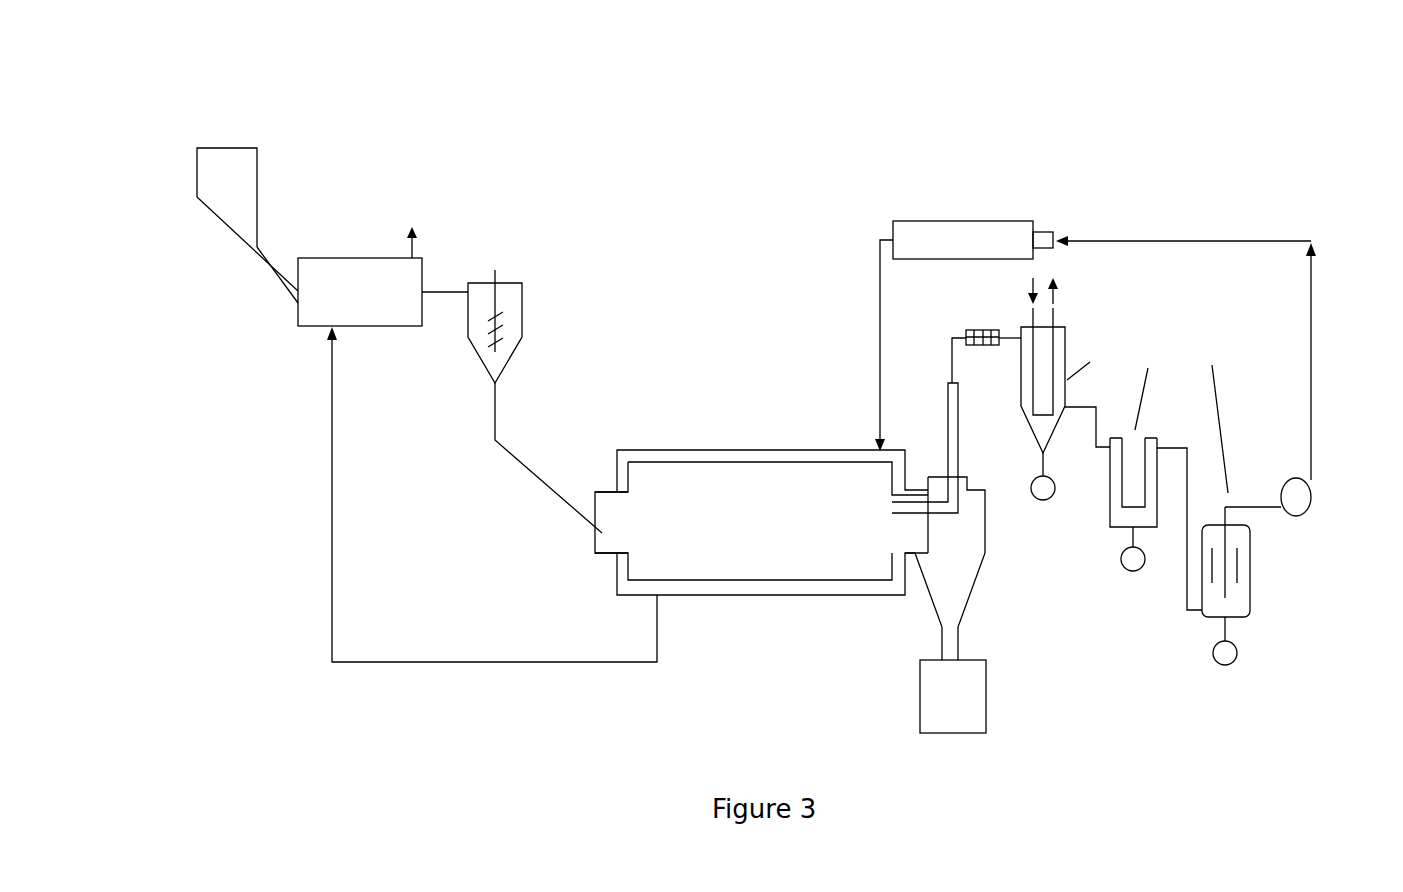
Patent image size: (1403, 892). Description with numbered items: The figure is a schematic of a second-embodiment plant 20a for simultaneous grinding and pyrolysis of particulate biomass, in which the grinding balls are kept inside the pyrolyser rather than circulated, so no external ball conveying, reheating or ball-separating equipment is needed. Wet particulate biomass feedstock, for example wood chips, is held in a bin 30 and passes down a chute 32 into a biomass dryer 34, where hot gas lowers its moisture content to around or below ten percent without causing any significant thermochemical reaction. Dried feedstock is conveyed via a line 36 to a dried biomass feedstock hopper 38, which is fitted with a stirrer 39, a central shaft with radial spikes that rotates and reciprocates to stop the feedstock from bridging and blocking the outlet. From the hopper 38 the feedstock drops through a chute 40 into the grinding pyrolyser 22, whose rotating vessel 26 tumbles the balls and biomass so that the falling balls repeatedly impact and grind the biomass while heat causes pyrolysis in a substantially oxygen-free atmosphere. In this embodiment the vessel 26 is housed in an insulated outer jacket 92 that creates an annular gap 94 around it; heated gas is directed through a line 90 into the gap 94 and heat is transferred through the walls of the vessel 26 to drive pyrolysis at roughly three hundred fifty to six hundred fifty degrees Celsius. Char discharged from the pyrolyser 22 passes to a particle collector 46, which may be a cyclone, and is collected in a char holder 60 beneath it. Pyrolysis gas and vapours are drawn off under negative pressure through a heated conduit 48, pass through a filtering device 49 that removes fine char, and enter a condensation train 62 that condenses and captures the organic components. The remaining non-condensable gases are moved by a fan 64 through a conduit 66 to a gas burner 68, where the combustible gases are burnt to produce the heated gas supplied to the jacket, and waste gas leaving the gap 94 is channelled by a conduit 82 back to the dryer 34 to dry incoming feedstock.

The plant 20a is at (143, 124).
The bin 30 is at (215, 180).
The chute 32 is at (268, 263).
The biomass dryer 34 is at (313, 308).
The line 36 is at (452, 292).
The dried biomass feedstock hopper 38 is at (510, 305).
The stirrer 39 is at (478, 347).
The chute 40 is at (518, 463).
The grinding pyrolyser 22 is at (738, 492).
The vessel 26 is at (602, 468).
The insulated outer jacket 92 is at (682, 450).
The gap 94 is at (810, 458).
The conduit 48 is at (947, 427).
The filtering device 49 is at (985, 348).
The particle collector 46 is at (985, 533).
The char holder 60 is at (935, 707).
The condensation train 62 is at (1139, 471).
The fan 64 is at (1310, 485).
The conduit 66 is at (1313, 303).
The gas burner 68 is at (1005, 233).
The line 90 is at (882, 296).
The conduit 82 is at (533, 665).